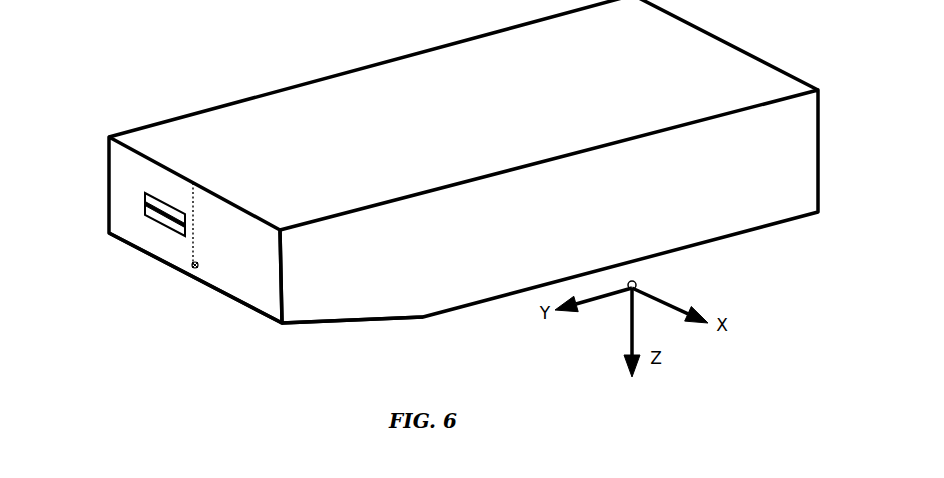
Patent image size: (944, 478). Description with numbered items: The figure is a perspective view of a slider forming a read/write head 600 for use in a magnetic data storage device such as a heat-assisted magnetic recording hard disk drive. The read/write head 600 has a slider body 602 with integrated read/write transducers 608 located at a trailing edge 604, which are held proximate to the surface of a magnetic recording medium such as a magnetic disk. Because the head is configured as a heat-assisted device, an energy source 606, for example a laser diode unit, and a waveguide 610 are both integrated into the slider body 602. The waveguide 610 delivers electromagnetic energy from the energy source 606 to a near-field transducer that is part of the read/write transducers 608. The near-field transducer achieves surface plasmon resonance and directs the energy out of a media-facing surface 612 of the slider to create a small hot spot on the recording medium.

The read/write head 600 is at (449, 194).
The slider body 602 is at (410, 67).
The trailing edge 604 is at (110, 208).
The energy source 606 is at (146, 218).
The read/write transducers 608 is at (192, 300).
The waveguide 610 is at (194, 238).
The media-facing surface 612 is at (282, 325).